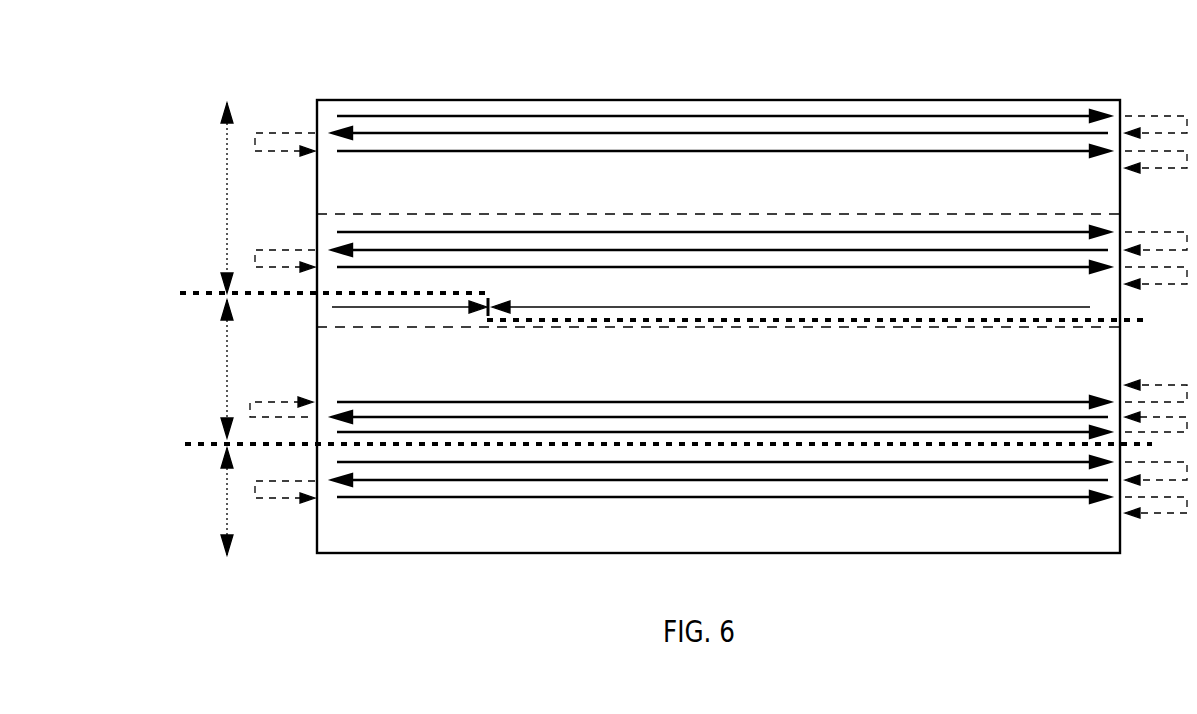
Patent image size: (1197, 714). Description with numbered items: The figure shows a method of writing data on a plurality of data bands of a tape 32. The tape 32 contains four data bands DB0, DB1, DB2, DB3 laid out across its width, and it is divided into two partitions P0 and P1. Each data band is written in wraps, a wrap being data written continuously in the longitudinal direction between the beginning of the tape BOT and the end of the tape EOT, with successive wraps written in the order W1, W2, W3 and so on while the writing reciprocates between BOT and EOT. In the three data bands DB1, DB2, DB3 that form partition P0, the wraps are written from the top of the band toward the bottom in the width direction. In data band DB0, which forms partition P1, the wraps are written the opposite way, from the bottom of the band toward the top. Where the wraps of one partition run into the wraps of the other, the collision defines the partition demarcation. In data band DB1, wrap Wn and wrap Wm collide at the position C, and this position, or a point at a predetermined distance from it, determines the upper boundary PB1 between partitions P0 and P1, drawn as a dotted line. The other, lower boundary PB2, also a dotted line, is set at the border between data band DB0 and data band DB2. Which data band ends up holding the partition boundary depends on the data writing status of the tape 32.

The tape 32 is at (555, 100).
The wrap W1 is at (802, 116).
The wrap W2 is at (847, 133).
The wrap W3 is at (897, 151).
The wrap Wm is at (442, 307).
The wrap Wn is at (565, 307).
The collision position C is at (490, 311).
The upper partition boundary PB1 is at (670, 318).
The lower partition boundary PB2 is at (633, 443).
The data band DB0 is at (718, 398).
The data band DB1 is at (721, 265).
The data band DB2 is at (721, 501).
The data band DB3 is at (721, 157).
The partition P0 is at (229, 329).
The partition P1 is at (228, 369).
The beginning of tape BOT is at (323, 60).
The end of tape EOT is at (1113, 60).